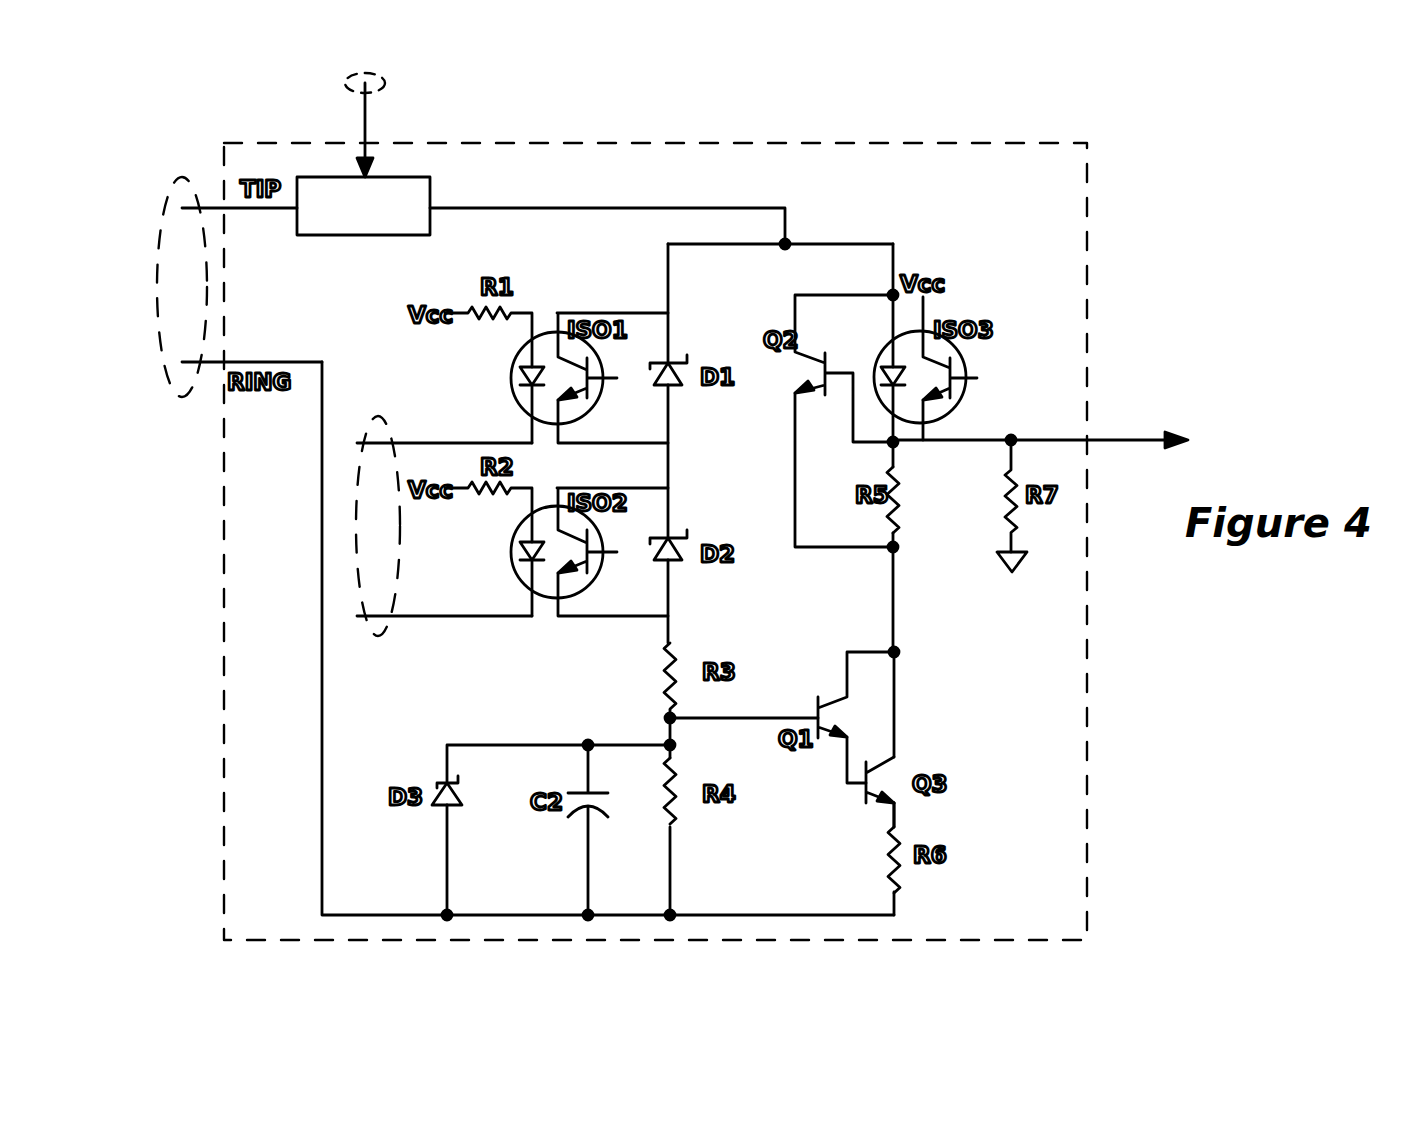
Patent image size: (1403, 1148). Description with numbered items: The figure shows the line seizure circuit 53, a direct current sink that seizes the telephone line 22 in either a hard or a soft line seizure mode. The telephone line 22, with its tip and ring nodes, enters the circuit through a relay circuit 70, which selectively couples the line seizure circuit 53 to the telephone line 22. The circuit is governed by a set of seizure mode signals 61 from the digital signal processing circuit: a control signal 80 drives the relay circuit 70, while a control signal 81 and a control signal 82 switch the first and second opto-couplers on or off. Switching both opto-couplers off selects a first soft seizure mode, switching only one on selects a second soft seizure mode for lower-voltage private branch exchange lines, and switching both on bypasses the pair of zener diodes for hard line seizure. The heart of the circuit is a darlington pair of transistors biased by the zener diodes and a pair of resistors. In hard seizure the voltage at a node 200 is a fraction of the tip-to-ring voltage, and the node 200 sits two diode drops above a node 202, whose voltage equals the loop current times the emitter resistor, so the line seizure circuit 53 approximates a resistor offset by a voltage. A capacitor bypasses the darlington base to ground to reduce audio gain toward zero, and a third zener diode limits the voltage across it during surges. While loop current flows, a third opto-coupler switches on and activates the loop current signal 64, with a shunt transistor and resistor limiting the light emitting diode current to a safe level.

The telephone line 22 is at (177, 403).
The line seizure circuit 53 is at (720, 138).
The seizure mode signals 61 is at (343, 88).
The loop current signal 64 is at (1105, 432).
The relay circuit 70 is at (368, 237).
The control signal 80 is at (367, 142).
The control signal 81 is at (500, 437).
The control signal 82 is at (493, 622).
The node 200 is at (742, 713).
The node 202 is at (893, 808).